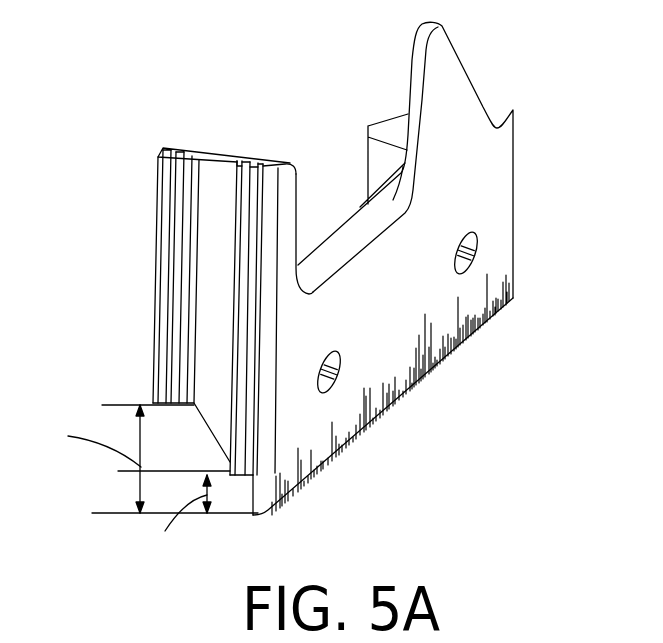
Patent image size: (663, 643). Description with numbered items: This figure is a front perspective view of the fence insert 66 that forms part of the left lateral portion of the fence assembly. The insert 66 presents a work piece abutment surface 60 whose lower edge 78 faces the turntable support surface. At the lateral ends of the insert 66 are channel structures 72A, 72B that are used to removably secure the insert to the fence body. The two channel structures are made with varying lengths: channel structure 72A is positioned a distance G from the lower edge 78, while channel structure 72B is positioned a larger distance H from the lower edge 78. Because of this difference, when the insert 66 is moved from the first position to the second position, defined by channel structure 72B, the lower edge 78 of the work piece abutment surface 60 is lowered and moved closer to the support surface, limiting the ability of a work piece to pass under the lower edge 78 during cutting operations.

The fence insert 66 is at (186, 118).
The work piece abutment surface 60 is at (380, 358).
The channel structure 72A is at (268, 172).
The channel structure 72B is at (165, 228).
The lower edge 78 is at (345, 443).